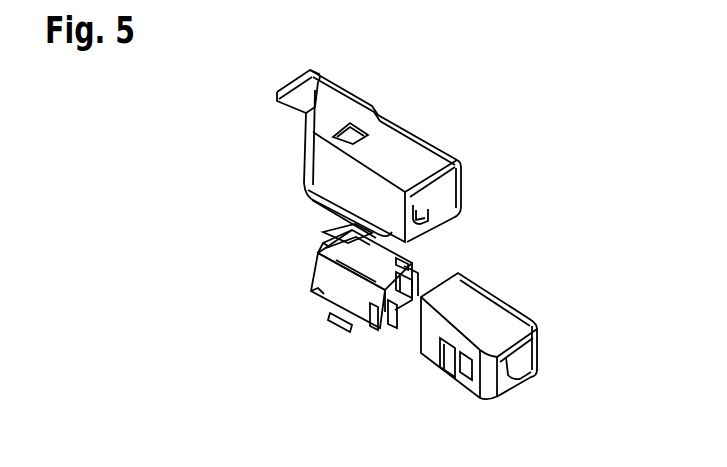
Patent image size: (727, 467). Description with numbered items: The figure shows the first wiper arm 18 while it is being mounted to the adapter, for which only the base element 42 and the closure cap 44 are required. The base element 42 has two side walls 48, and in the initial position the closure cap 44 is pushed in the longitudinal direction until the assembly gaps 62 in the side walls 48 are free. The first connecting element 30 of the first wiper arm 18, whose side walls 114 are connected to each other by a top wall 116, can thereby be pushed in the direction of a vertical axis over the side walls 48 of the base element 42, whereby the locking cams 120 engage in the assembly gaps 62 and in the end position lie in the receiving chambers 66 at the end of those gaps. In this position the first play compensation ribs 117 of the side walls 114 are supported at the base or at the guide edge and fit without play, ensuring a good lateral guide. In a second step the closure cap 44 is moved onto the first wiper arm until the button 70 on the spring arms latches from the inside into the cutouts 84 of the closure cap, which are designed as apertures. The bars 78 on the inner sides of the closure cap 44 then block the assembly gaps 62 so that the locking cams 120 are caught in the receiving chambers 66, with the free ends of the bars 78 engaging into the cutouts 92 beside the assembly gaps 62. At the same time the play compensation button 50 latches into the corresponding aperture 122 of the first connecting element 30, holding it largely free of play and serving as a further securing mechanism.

The first wiper arm 18 is at (300, 86).
The first connecting element 30 is at (472, 149).
The base element 42 is at (299, 269).
The closure cap 44 is at (526, 302).
The side walls 48 is at (392, 273).
The play compensation button 50 is at (322, 233).
The assembly gaps 62 is at (396, 263).
The receiving chambers 66 is at (374, 320).
The button 70 is at (442, 346).
The bars 78 is at (393, 323).
The cutouts 84 is at (462, 368).
The cutouts 92 is at (338, 322).
The side walls 114 is at (318, 165).
The top wall 116 is at (400, 158).
The first play compensation ribs 117 is at (320, 200).
The locking cams 120 is at (416, 213).
The aperture 122 is at (356, 133).